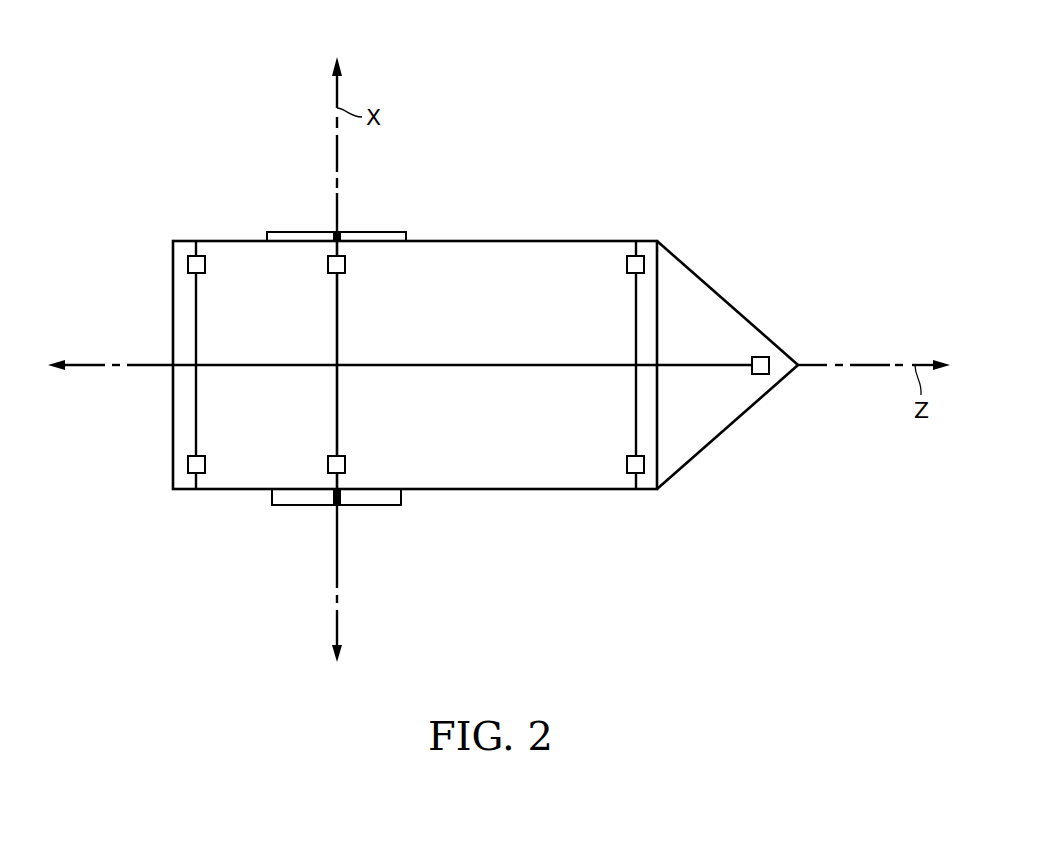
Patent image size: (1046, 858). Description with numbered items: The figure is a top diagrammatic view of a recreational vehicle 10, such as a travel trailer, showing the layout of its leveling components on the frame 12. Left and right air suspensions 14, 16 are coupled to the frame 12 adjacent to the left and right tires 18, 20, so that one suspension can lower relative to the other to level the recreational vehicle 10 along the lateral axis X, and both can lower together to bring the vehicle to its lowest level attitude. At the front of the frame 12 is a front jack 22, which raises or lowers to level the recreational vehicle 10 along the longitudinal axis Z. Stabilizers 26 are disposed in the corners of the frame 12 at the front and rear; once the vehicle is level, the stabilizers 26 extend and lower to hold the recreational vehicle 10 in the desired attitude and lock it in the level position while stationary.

The recreational vehicle 10 is at (485, 302).
The frame 12 is at (485, 240).
The left air suspension 14 is at (327, 265).
The right air suspension 16 is at (327, 465).
The left tire 18 is at (300, 230).
The right tire 20 is at (302, 507).
The front jack 22 is at (770, 365).
The stabilizers 26 is at (196, 255).